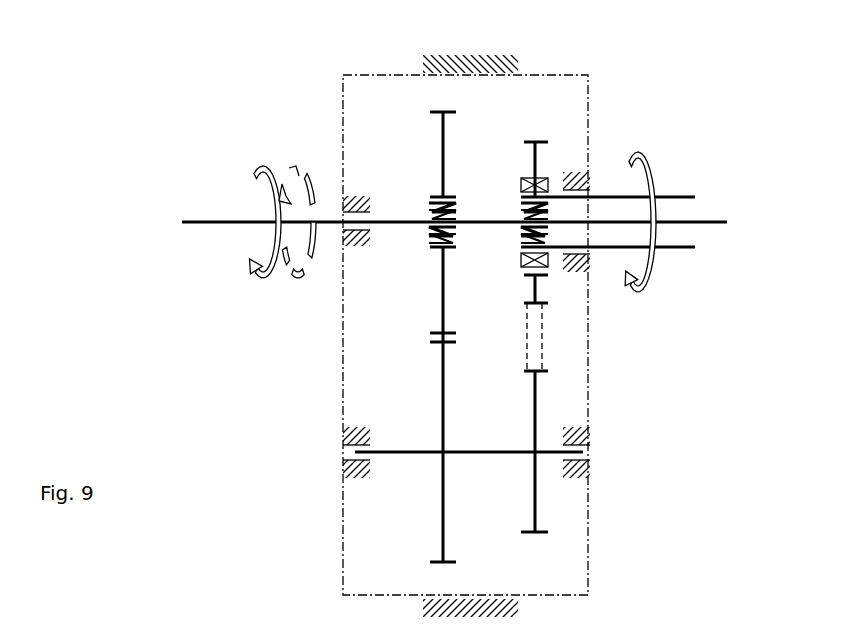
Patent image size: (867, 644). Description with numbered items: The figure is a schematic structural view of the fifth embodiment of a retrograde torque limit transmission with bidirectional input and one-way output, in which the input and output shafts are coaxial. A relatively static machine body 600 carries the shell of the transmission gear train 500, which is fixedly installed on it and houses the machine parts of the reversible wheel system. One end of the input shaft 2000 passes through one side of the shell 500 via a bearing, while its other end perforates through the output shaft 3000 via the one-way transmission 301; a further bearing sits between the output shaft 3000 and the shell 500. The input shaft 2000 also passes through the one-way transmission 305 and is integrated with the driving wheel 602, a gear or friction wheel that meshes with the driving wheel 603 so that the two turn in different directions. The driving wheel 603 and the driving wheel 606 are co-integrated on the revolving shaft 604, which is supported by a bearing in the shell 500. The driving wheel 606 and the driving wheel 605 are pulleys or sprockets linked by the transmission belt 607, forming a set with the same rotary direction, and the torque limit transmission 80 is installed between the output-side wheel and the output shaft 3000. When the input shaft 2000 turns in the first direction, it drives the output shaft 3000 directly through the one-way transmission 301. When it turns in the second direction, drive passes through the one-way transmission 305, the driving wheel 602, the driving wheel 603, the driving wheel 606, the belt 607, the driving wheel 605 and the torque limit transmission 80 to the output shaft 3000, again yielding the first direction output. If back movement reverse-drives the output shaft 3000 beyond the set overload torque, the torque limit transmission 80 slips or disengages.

The machine body 600 is at (487, 72).
The shell of the transmission gear train 500 is at (342, 137).
The input shaft 2000 is at (232, 220).
The output shaft 3000 is at (665, 195).
The driving wheel 602 is at (442, 143).
The driving wheel 603 is at (442, 410).
The driving wheel 605 is at (544, 141).
The driving wheel 606 is at (538, 536).
The transmission belt 607 is at (525, 332).
The revolving shaft 604 is at (552, 453).
The one-way transmission 305 is at (427, 237).
The one-way transmission 301 is at (522, 237).
The torque limit transmission 80 is at (520, 185).